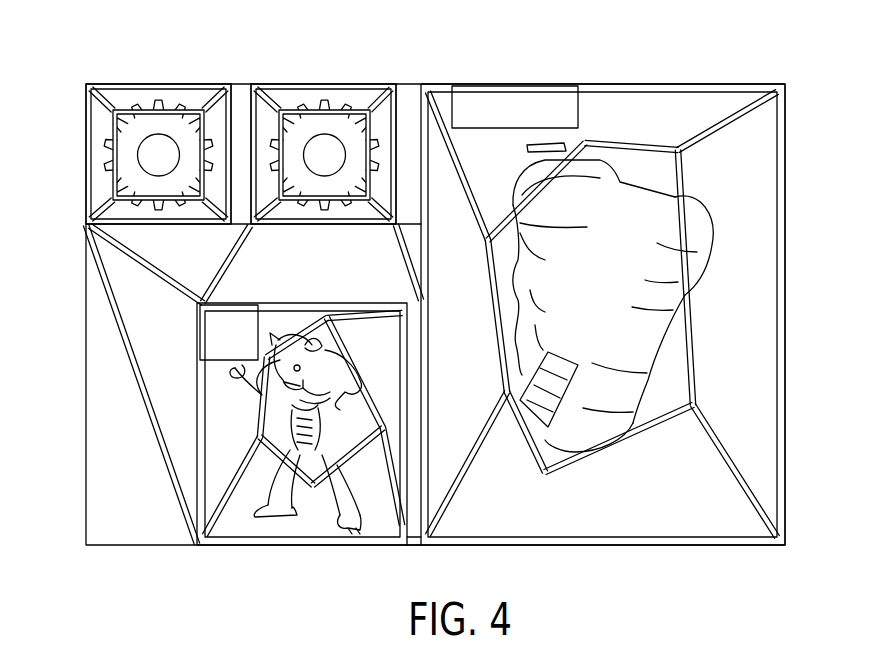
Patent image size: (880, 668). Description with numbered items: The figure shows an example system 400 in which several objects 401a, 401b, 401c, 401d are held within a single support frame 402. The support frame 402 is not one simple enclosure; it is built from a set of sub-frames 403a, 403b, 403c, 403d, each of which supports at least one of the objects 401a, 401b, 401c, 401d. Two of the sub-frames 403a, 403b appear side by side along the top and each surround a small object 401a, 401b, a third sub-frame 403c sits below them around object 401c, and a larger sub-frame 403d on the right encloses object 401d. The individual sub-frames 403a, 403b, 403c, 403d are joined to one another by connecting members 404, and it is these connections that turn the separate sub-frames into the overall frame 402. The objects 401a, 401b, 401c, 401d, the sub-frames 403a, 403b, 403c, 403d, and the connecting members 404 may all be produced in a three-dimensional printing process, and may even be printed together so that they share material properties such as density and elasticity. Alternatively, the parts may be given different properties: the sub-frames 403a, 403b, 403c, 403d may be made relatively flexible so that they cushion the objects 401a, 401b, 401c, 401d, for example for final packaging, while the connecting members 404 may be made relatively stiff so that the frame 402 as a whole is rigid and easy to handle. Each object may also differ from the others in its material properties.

The system 400 is at (690, 53).
The object 401a is at (122, 145).
The object 401b is at (297, 127).
The object 401c is at (293, 413).
The object 401d is at (690, 212).
The support frame 402 is at (517, 72).
The sub-frame 403a is at (86, 117).
The sub-frame 403b is at (323, 84).
The sub-frame 403c is at (233, 540).
The sub-frame 403d is at (785, 312).
The connecting member 404 is at (243, 84).